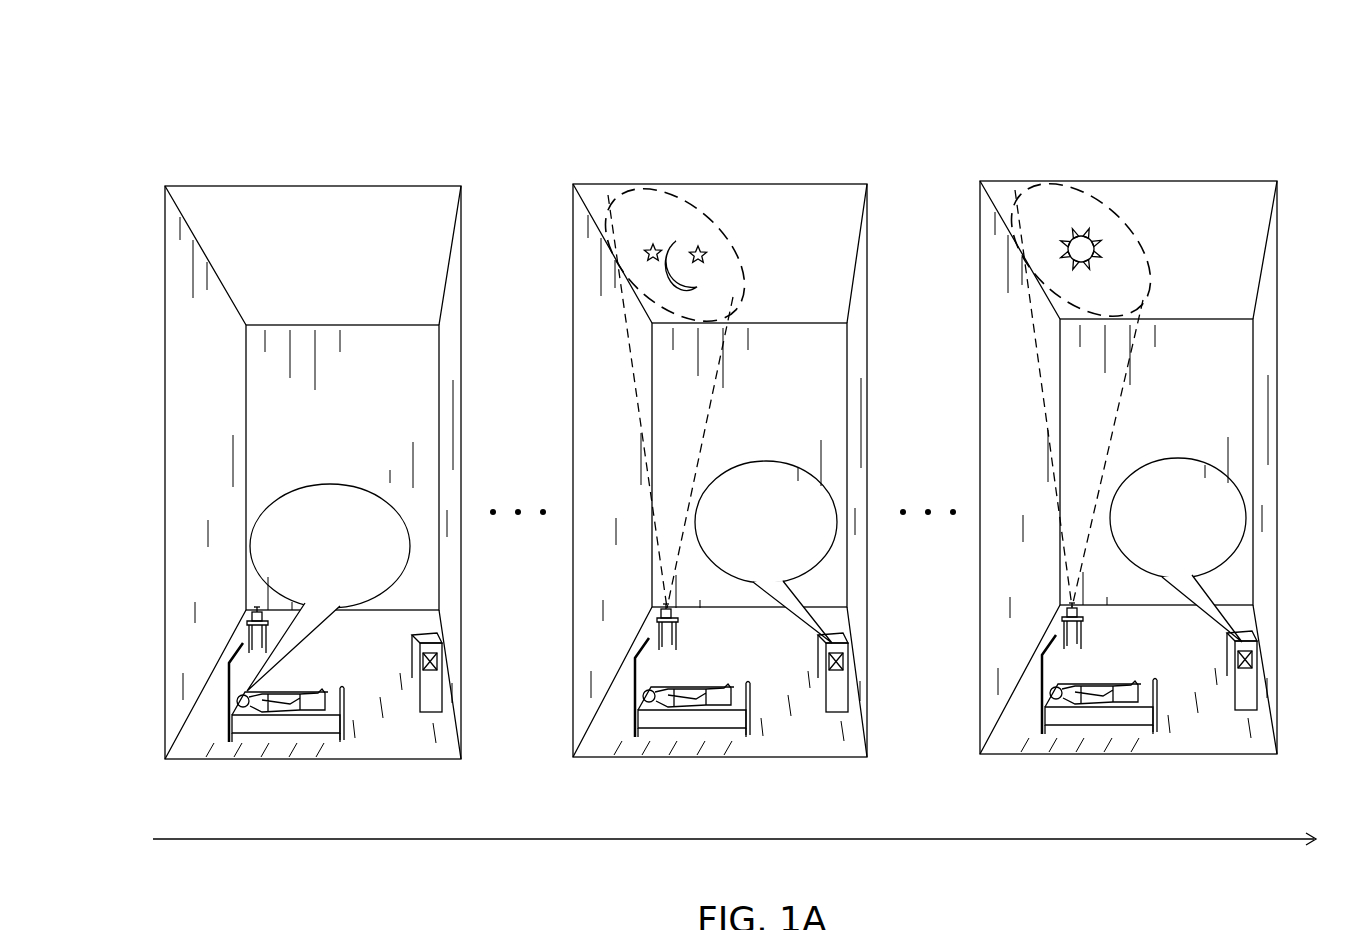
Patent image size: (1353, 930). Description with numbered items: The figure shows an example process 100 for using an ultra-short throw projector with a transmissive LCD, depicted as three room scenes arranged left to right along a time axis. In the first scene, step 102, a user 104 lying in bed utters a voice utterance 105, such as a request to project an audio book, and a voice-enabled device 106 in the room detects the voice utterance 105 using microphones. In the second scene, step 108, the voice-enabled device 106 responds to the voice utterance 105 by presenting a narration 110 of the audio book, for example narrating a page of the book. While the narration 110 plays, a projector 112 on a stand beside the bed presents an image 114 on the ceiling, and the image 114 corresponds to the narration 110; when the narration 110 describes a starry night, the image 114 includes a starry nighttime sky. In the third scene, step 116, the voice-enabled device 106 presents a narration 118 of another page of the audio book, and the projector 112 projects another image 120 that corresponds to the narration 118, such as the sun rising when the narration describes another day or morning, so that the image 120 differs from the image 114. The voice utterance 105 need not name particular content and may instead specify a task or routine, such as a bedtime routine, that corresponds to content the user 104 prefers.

The process 100 is at (1203, 31).
The step 102 is at (414, 143).
The user 104 is at (263, 692).
The voice utterance 105 is at (330, 484).
The voice-enabled device 106 is at (436, 652).
The step 108 is at (818, 143).
The narration 110 is at (760, 462).
The projector 112 is at (672, 610).
The image 114 is at (713, 250).
The step 116 is at (1212, 143).
The narration 118 is at (1170, 458).
The image 120 is at (1122, 248).